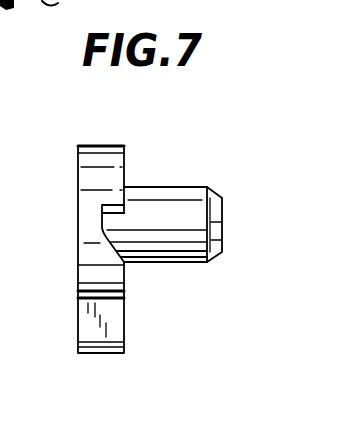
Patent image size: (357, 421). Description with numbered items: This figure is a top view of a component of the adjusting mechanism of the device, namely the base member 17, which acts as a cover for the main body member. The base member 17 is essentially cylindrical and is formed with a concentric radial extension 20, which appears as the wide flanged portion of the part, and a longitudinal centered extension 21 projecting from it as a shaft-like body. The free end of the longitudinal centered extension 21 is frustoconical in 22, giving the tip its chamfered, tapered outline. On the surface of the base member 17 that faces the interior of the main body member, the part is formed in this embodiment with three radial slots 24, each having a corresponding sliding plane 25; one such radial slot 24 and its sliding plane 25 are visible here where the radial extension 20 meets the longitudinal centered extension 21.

The base member 17 is at (78, 165).
The concentric radial extension 20 is at (78, 338).
The longitudinal centered extension 21 is at (162, 237).
The frustoconical free end 22 is at (222, 222).
The radial slot 24 is at (102, 206).
The sliding plane 25 is at (103, 238).